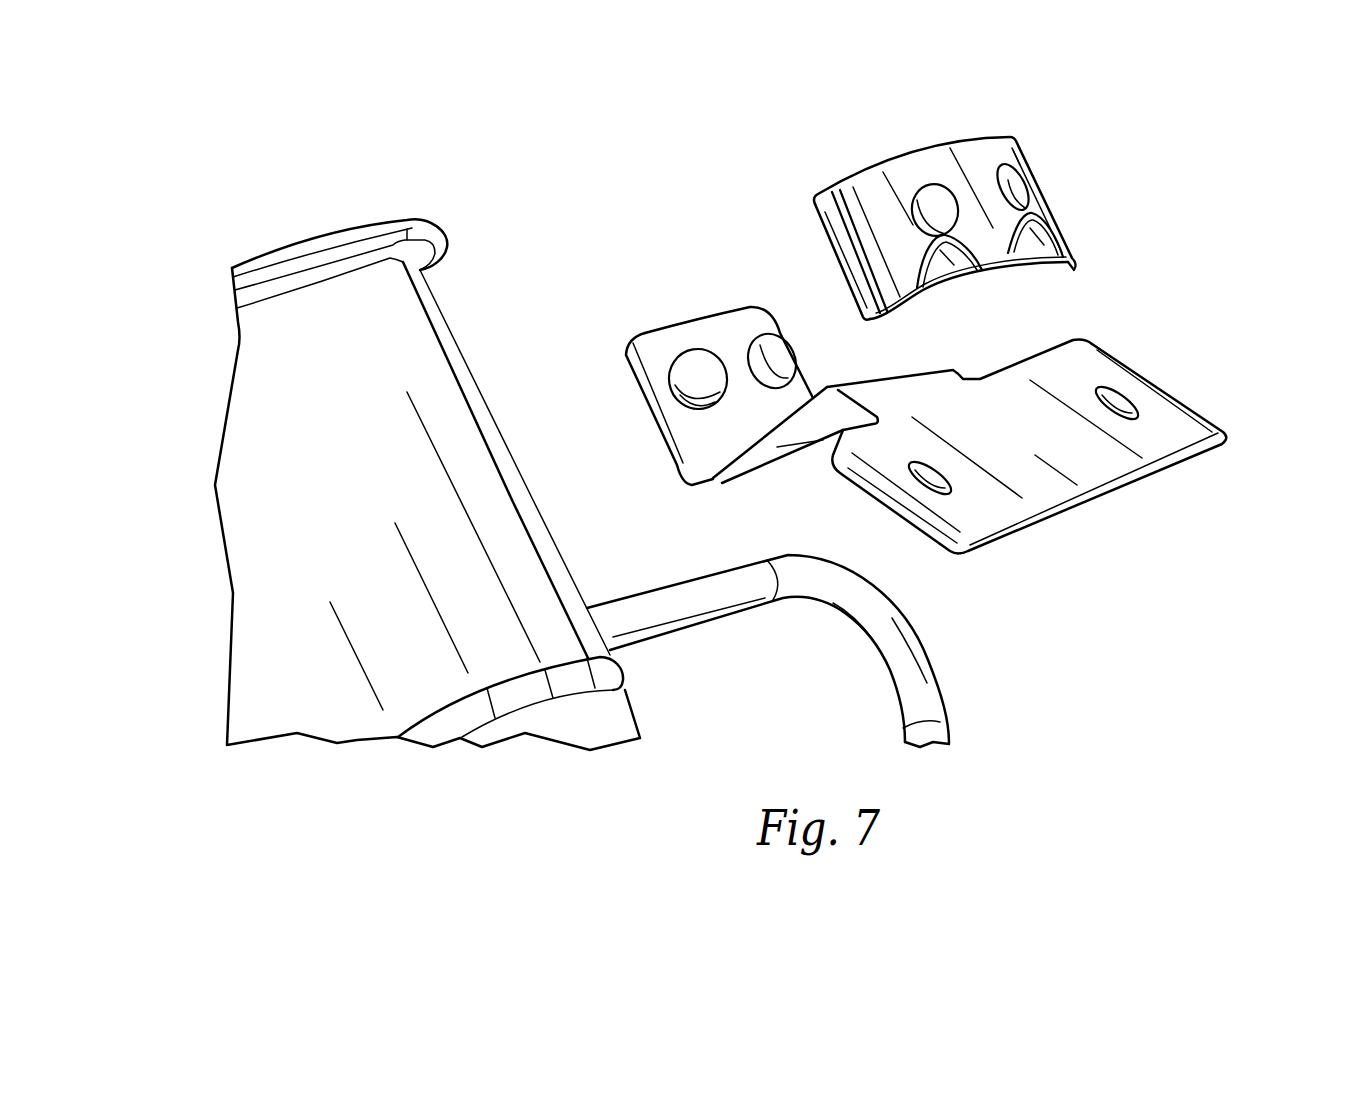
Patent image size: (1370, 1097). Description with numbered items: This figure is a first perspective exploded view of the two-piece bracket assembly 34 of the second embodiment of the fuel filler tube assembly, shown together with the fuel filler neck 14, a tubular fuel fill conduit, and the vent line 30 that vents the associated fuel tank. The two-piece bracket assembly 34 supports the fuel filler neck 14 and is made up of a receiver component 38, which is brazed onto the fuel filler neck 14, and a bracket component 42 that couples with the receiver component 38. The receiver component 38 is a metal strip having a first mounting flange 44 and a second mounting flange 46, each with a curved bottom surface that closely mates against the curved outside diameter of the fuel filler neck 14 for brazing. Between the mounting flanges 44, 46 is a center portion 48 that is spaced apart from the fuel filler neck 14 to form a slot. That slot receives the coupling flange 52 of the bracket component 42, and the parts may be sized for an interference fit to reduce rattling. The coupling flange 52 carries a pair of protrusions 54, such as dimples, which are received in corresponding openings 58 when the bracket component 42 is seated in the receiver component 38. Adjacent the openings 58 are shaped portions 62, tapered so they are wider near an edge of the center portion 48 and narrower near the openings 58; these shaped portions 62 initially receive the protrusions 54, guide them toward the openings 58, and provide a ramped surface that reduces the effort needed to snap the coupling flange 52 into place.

The fuel filler neck 14 is at (378, 369).
The vent line 30 is at (940, 682).
The two-piece bracket assembly 34 is at (1290, 125).
The receiver component 38 is at (969, 198).
The bracket component 42 is at (1183, 378).
The first mounting flange 44 is at (1070, 266).
The second mounting flange 46 is at (830, 236).
The center portion 48 is at (967, 160).
The coupling flange 52 is at (709, 366).
The protrusions 54 is at (634, 288).
The openings 58 is at (930, 203).
The shaped portions 62 is at (972, 283).